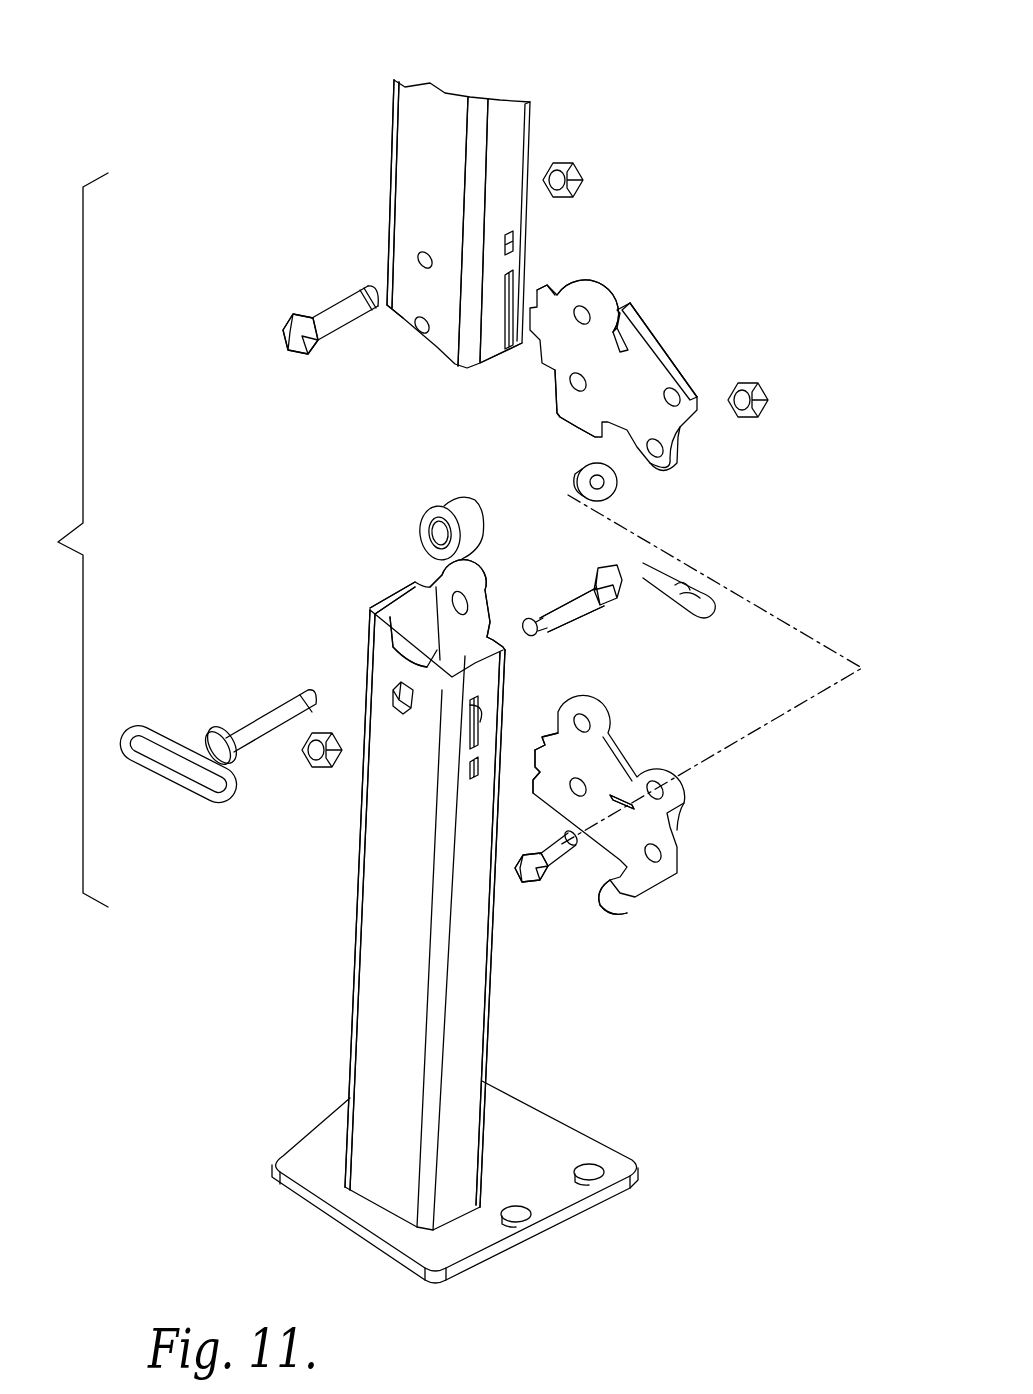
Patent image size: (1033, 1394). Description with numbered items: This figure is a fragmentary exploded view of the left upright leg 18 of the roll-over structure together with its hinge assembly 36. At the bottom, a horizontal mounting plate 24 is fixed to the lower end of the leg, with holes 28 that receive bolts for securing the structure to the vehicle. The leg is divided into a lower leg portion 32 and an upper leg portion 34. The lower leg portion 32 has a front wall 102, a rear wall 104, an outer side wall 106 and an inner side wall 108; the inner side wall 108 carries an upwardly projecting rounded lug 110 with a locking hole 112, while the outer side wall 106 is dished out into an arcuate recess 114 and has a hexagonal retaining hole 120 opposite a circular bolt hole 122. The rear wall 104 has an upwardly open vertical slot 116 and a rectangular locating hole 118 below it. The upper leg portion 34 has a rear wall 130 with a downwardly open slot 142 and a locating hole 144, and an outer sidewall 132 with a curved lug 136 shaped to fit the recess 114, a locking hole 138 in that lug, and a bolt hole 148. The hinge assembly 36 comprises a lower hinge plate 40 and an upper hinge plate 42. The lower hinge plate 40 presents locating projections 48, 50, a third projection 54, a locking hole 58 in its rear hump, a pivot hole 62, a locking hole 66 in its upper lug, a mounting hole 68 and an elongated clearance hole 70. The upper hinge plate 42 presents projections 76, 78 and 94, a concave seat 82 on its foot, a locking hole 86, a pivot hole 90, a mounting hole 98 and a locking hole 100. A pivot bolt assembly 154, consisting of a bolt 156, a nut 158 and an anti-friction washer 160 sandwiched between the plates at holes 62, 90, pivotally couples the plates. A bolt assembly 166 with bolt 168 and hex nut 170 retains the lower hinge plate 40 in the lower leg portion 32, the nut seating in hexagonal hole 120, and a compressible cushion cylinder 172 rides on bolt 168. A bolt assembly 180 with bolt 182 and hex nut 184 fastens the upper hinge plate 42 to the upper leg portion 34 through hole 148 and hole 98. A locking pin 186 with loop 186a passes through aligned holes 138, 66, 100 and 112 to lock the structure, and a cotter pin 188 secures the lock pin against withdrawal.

The upright leg 18 is at (390, 76).
The mounting plate 24 is at (478, 1243).
The holes 28 is at (598, 1170).
The lower leg portion 32 is at (494, 1040).
The upper leg portion 34 is at (538, 110).
The hinge assembly 36 is at (750, 344).
The lower hinge plate 40 is at (700, 776).
The upper hinge plate 42 is at (657, 320).
The locating projection 48 is at (532, 790).
The locating projection 50 is at (535, 752).
The third forwardly extending projection 54 is at (620, 905).
The locking hole 58 is at (660, 857).
The pivot hole 62 is at (662, 795).
The locking hole 66 is at (586, 720).
The mounting hole 68 is at (582, 784).
The elongated clearance hole 70 is at (616, 794).
The forwardly extending projection 76 is at (522, 345).
The forwardly extending projection 78 is at (540, 298).
The concave seat 82 is at (575, 430).
The locking hole 86 is at (672, 460).
The pivot hole 90 is at (665, 399).
The forwardly extending projection 94 is at (620, 308).
The mounting hole 98 is at (580, 326).
The locking hole 100 is at (573, 390).
The front wall 102 is at (392, 606).
The rear wall 104 is at (476, 985).
The outer side wall 106 is at (385, 978).
The inner side wall 108 is at (482, 660).
The rounded lug 110 is at (470, 588).
The locking hole 112 is at (468, 603).
The arcuate recess 114 is at (388, 636).
The vertical slot 116 is at (468, 744).
The rectangular locating hole 118 is at (470, 785).
The hexagonal retaining hole 120 is at (396, 690).
The circular bolt hole 122 is at (455, 658).
The rear wall 130 is at (500, 115).
The outer sidewall 132 is at (415, 137).
The curved lug 136 is at (414, 366).
The locking hole 138 is at (418, 330).
The slot 142 is at (518, 275).
The rectangular locating hole 144 is at (516, 244).
The bolt hole 148 is at (420, 257).
The pivot bolt assembly 154 is at (512, 870).
The bolt 156 is at (524, 885).
The nut 158 is at (768, 394).
The anti-friction washer 160 is at (577, 483).
The bolt assembly 166 is at (583, 620).
The bolt 168 is at (586, 592).
The hex nut 170 is at (330, 770).
The cushion cylinder 172 is at (425, 513).
The bolt assembly 180 is at (280, 356).
The bolt 182 is at (330, 316).
The hex nut 184 is at (578, 166).
The locking pin 186 is at (262, 720).
The loop 186a is at (160, 792).
The cotter pin 188 is at (712, 598).